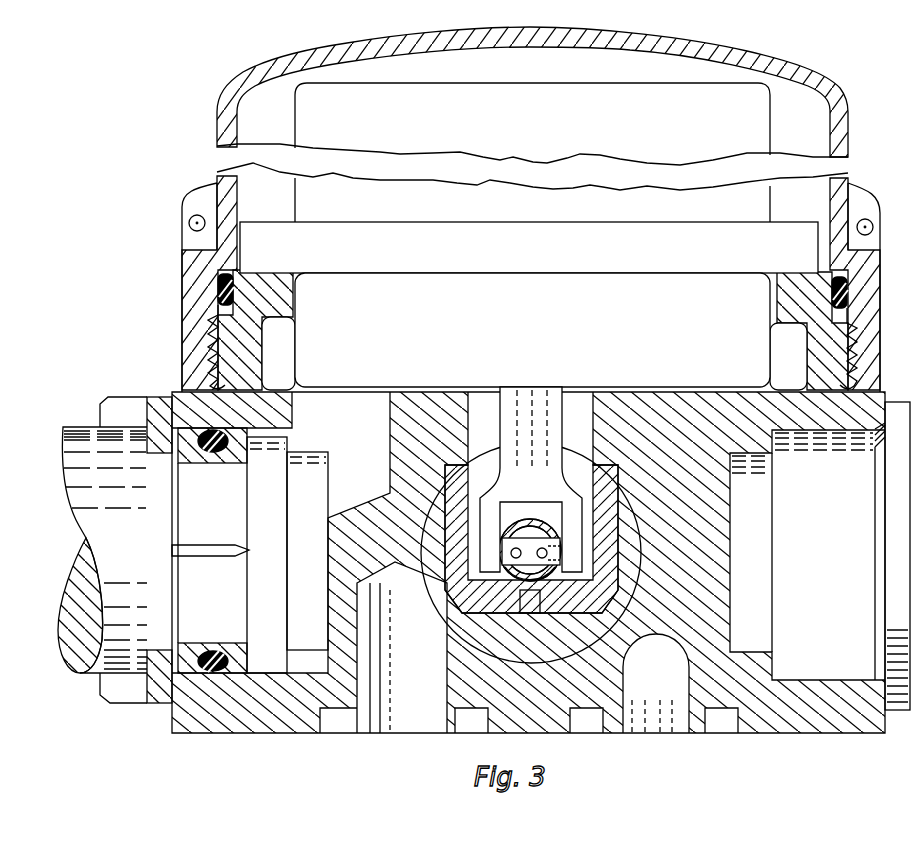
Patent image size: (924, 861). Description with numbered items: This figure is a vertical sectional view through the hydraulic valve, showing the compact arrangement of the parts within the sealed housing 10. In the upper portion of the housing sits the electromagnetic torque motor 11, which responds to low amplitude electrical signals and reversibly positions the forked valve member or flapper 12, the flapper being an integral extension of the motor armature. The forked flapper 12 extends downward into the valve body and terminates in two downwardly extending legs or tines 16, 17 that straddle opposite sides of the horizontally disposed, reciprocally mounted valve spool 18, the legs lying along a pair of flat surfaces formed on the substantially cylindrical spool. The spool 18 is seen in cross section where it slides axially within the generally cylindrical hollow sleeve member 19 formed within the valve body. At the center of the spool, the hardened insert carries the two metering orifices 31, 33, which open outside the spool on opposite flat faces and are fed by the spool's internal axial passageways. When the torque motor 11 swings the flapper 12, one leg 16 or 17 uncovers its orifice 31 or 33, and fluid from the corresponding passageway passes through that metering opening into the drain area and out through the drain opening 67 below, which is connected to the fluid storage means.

The sealed housing 10 is at (843, 135).
The electromagnetic torque motor 11 is at (539, 318).
The forked valve member or flapper 12 is at (535, 435).
The leg or tine 16 is at (483, 520).
The leg or tine 17 is at (573, 542).
The valve spool 18 is at (543, 527).
The hollow sleeve member 19 is at (550, 583).
The orifice 31 is at (550, 565).
The orifice 33 is at (508, 562).
The drain opening 67 is at (524, 602).